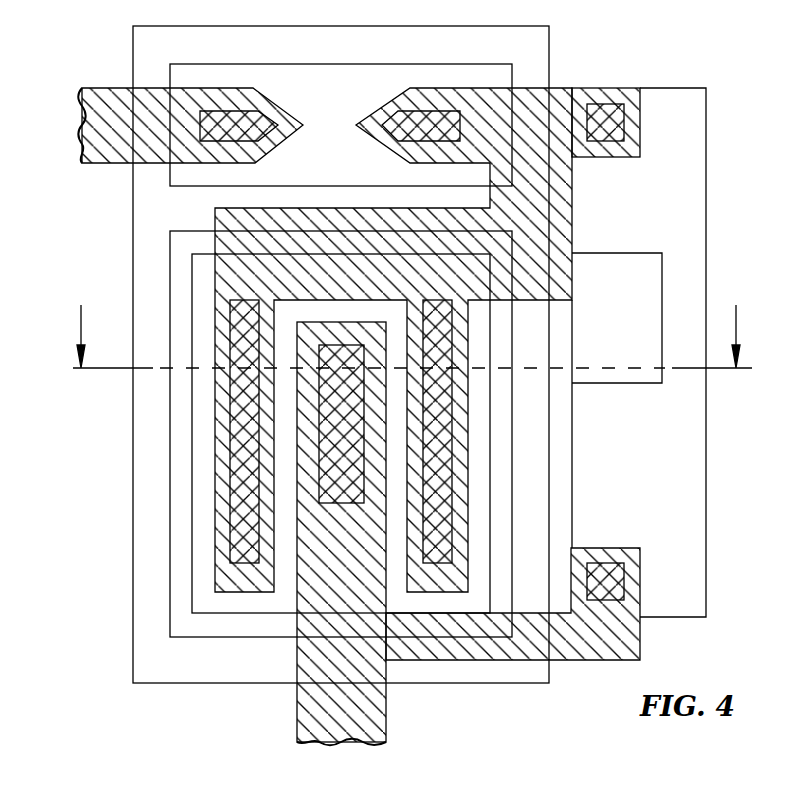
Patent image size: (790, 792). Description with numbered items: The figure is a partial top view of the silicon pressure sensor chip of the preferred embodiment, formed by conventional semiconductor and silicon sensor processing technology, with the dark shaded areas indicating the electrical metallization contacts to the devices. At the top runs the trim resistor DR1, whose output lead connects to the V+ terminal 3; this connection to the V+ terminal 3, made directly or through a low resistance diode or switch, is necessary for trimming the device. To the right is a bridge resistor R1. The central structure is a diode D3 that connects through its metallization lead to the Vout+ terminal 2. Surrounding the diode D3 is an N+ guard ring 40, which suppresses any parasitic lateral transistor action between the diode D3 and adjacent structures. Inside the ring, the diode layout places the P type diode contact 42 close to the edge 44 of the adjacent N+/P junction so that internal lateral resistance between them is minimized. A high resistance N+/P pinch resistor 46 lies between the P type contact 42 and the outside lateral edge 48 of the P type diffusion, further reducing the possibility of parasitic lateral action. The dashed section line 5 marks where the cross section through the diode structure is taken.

The N+ guard ring 40 is at (477, 683).
The P type diode contact 42 is at (318, 459).
The edge of the adjacent N+/P junction 44 is at (273, 480).
The N+/P pinch resistor 46 is at (202, 518).
The outside lateral edge of the P type diffusion 48 is at (192, 557).
The diode D3 is at (230, 614).
The bridge resistor R1 is at (662, 331).
The trim resistor DR1 is at (334, 88).
The Vout+ terminal 2 is at (460, 667).
The V+ terminal 3 is at (159, 125).
The section line 5 is at (412, 349).